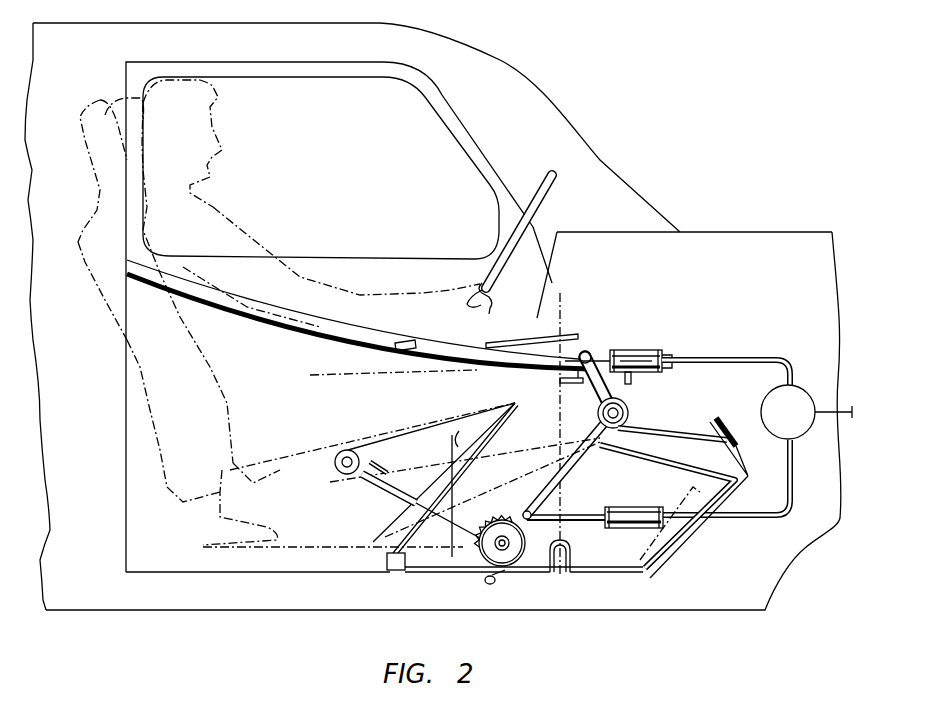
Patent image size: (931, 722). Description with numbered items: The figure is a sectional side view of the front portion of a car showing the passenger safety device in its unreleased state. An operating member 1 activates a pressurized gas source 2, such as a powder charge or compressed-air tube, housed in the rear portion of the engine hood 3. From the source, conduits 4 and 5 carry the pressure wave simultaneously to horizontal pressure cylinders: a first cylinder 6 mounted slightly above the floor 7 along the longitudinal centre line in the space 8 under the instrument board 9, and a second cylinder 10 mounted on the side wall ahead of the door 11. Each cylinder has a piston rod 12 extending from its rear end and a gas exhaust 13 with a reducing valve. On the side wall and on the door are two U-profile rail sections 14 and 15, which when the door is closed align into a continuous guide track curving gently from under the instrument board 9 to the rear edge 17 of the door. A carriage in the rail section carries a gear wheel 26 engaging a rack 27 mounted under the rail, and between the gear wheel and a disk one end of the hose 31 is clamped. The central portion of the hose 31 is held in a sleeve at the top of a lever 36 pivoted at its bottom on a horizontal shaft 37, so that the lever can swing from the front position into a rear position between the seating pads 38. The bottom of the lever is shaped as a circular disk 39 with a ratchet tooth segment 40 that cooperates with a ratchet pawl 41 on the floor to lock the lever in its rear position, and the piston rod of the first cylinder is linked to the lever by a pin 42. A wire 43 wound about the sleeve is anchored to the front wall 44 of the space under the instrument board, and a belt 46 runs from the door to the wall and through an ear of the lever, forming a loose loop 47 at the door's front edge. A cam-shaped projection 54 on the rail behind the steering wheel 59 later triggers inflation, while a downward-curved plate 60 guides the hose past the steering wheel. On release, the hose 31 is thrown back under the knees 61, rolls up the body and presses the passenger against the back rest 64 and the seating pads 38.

The operating member 1 is at (830, 396).
The pressurized gas source 2 is at (798, 396).
The engine hood 3 is at (723, 236).
The conduit 4 is at (762, 360).
The conduit 5 is at (794, 488).
The first cylinder 6 is at (630, 508).
The floor 7 is at (592, 573).
The space 8 is at (662, 352).
The instrument board 9 is at (541, 277).
The second cylinder 10 is at (636, 350).
The door 11 is at (360, 258).
The piston rod 12 is at (622, 350).
The gas exhaust 13 is at (632, 378).
The rail section 14 is at (561, 380).
The rail section 15 is at (246, 320).
The rear edge 17 is at (126, 374).
The gear wheel 26 is at (588, 350).
The rack 27 is at (600, 385).
The hose 31 is at (628, 412).
The lever 36 is at (585, 462).
The horizontal shaft 37 is at (408, 563).
The seating pads 38 is at (313, 556).
The circular disk 39 is at (497, 549).
The ratchet tooth segment 40 is at (490, 526).
The ratchet pawl 41 is at (498, 581).
The pin 42 is at (526, 511).
The wire 43 is at (728, 448).
The front wall 44 is at (675, 352).
The belt 46 is at (722, 488).
The loose loop 47 is at (566, 560).
The cam-shaped projection 54 is at (399, 343).
The steering wheel 59 is at (540, 208).
The plate 60 is at (510, 340).
The knees 61 is at (494, 391).
The back rest 64 is at (78, 246).